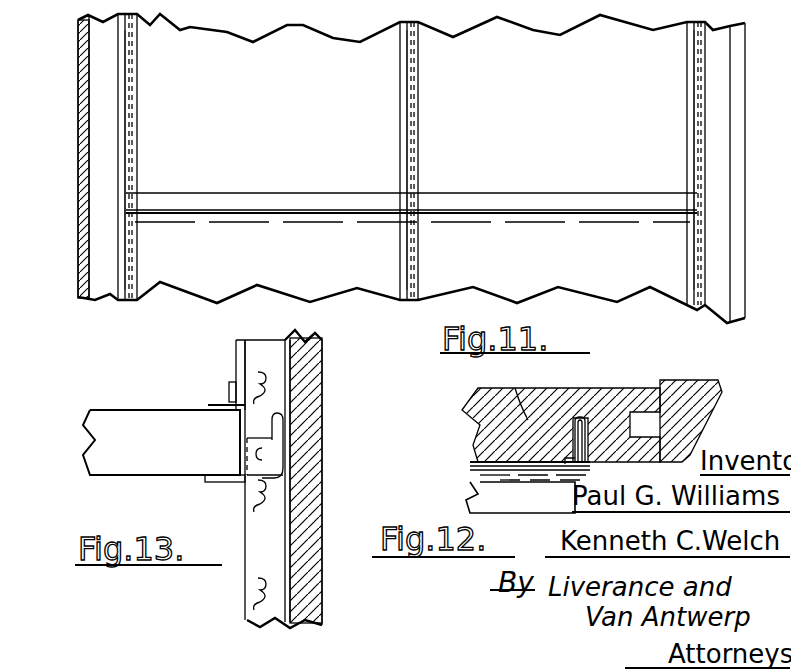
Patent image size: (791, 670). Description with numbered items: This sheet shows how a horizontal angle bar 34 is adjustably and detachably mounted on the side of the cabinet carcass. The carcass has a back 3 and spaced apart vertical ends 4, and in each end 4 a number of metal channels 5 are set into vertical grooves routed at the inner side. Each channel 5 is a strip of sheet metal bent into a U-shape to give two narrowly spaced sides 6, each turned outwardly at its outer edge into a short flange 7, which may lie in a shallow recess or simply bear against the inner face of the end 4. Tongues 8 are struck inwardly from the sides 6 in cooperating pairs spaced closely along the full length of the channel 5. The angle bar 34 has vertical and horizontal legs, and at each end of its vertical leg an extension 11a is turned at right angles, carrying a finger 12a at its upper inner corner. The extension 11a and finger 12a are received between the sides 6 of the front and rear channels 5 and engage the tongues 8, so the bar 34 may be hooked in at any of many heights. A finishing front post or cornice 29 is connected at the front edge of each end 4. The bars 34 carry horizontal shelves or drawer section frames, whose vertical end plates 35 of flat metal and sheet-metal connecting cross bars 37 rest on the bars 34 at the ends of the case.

In FIG. 11, the back 3 is at (78, 112).
In FIG. 11, the end 4 is at (303, 48).
In FIG. 12, the end 4 is at (555, 402).
In FIG. 11, the metal channel 5 is at (128, 120).
In FIG. 12, the metal channel 5 is at (582, 418).
In FIG. 13, the side 6 is at (258, 352).
In FIG. 11, the flange 7 is at (134, 85).
In FIG. 13, the tongue 8 is at (265, 494).
In FIG. 13, the extension 11a is at (268, 455).
In FIG. 12, the extension 11a is at (600, 466).
In FIG. 13, the finger 12a is at (283, 420).
In FIG. 12, the finger 12a is at (512, 378).
In FIG. 12, the finishing front post 29 is at (680, 392).
In FIG. 11, the horizontal angle bar 34 is at (345, 205).
In FIG. 13, the horizontal angle bar 34 is at (232, 482).
In FIG. 12, the horizontal angle bar 34 is at (476, 486).
In FIG. 13, the vertical end plate 35 is at (235, 352).
In FIG. 13, the cross bar 37 is at (132, 462).